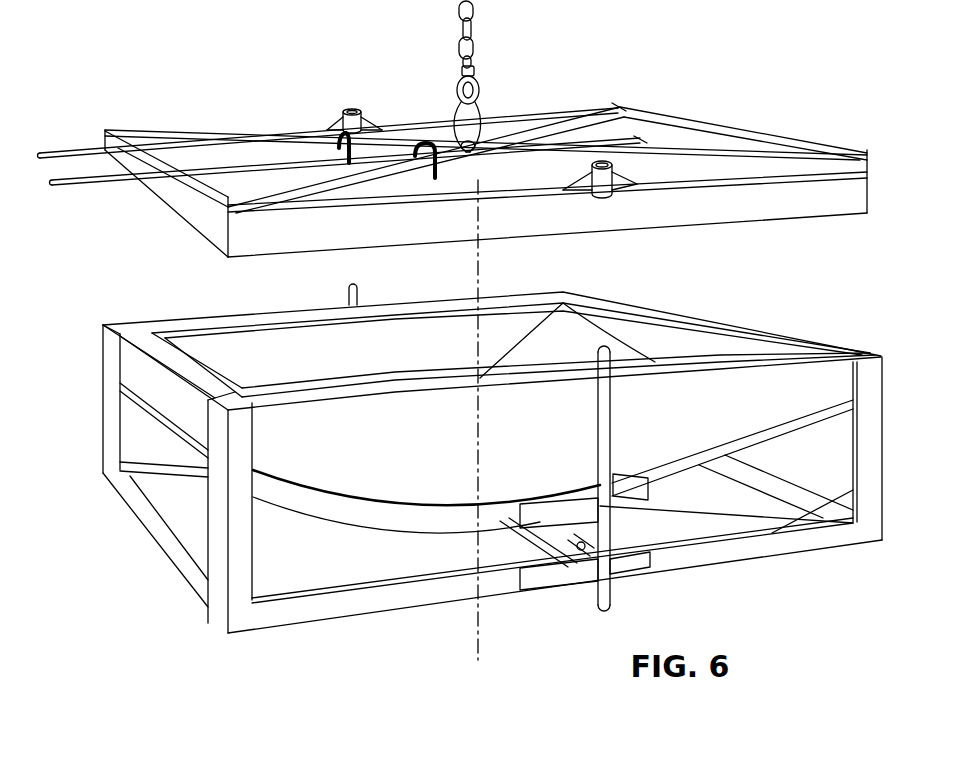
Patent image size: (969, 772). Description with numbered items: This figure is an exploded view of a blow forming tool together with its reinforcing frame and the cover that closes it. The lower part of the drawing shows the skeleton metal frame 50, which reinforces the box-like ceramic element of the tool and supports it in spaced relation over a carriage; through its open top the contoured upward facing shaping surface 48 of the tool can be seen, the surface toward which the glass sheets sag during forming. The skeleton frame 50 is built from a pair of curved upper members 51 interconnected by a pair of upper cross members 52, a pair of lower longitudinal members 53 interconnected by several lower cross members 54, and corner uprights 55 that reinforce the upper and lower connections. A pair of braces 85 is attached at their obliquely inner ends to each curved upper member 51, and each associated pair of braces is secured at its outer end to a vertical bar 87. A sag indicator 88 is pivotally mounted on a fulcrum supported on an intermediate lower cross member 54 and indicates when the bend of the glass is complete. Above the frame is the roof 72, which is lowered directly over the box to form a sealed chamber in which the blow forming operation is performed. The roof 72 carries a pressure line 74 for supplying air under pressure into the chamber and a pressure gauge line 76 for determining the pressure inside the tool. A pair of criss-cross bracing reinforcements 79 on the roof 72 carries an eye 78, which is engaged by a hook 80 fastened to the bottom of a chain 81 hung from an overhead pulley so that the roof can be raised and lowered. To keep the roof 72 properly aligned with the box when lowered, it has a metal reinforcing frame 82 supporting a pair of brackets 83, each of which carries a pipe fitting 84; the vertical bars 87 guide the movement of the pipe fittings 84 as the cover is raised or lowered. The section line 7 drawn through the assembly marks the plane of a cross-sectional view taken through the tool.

The section line 7- 7 is at (478, 173).
The upward facing shaping surface 48 is at (577, 358).
The skeleton metal frame 50 is at (207, 627).
The curved upper members 51 is at (302, 513).
The upper cross members 52 is at (175, 420).
The lower longitudinal members 53 is at (397, 613).
The lower cross members 54 is at (153, 543).
The corner uprights 55 is at (885, 367).
The roof 72 is at (716, 127).
The pressure line 74 is at (65, 187).
The pressure gauge line 76 is at (80, 150).
The eye 78 is at (484, 110).
The criss-cross bracing reinforcements 79 is at (600, 103).
The hook 80 is at (487, 72).
The chain 81 is at (457, 28).
The metal reinforcing frame 82 is at (372, 198).
The brackets 83 is at (372, 118).
The pipe fitting 84 is at (343, 118).
The braces 85 is at (558, 503).
The vertical bar 87 is at (358, 297).
The sag indicator 88 is at (577, 543).